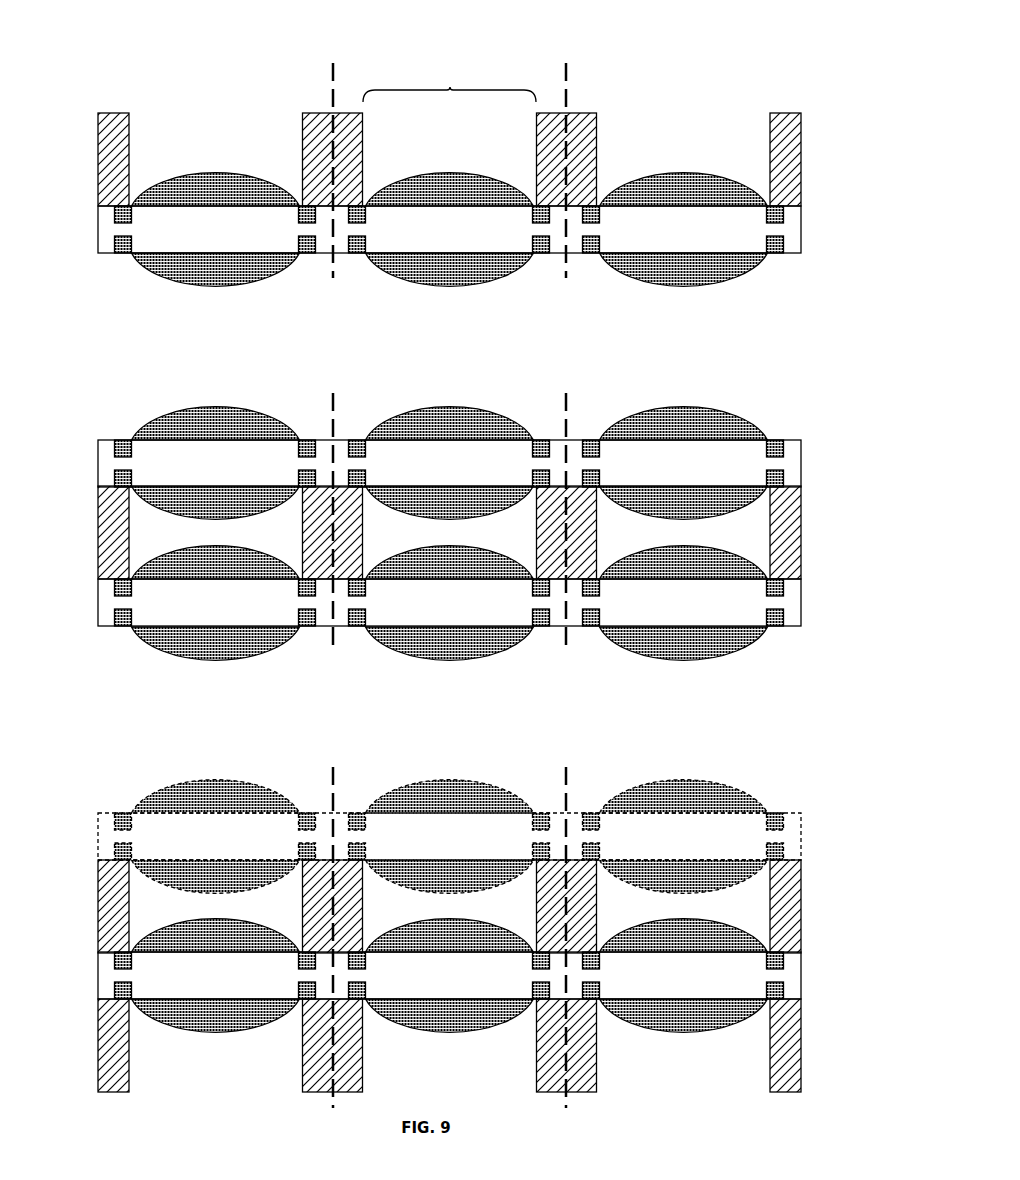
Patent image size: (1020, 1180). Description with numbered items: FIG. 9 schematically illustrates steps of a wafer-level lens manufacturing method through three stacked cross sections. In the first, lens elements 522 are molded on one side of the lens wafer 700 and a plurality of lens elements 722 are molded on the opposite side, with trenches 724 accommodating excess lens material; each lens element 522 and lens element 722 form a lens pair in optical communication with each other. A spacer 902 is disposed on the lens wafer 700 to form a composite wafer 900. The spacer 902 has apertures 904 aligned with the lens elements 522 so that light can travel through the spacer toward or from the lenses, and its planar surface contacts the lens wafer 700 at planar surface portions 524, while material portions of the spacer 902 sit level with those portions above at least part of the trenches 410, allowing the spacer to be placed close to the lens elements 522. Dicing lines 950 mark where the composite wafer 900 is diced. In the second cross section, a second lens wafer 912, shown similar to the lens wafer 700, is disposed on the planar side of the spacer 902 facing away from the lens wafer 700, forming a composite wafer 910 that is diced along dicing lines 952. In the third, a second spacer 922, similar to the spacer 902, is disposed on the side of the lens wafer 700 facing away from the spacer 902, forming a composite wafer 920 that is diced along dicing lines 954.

The composite wafer 900 is at (455, 179).
The spacer 902 is at (98, 180).
The apertures 904 is at (450, 87).
The trenches 410 is at (299, 212).
The lens elements 522 is at (447, 173).
The planar surface portions 524 is at (316, 193).
The lens wafer 700 is at (72, 229).
The lens elements 722 is at (480, 285).
The trenches 724 is at (317, 244).
The dicing lines 950 is at (329, 100).
The composite wafer 910 is at (467, 494).
The second lens wafer 912 is at (73, 463).
The dicing lines 952 is at (330, 428).
The composite wafer 920 is at (472, 910).
The dicing lines 954 is at (328, 802).
The second spacer 922 is at (98, 1057).